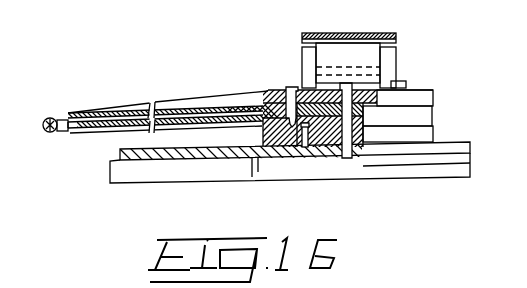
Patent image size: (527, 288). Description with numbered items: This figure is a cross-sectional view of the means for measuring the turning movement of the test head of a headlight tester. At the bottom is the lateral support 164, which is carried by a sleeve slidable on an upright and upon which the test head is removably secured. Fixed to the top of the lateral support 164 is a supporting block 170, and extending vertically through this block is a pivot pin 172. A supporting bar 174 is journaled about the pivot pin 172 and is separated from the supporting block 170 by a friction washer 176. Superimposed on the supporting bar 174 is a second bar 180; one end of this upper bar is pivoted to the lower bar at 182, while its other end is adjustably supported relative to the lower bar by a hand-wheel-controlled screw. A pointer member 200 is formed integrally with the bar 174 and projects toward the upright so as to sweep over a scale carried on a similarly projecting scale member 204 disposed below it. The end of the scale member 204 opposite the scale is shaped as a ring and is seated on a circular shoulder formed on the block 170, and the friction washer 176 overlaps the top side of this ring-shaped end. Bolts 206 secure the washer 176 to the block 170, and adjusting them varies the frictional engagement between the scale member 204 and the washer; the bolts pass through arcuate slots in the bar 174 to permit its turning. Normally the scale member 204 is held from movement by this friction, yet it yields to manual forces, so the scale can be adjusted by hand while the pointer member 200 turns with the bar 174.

The lateral support 164 is at (446, 170).
The supporting block 170 is at (272, 160).
The vertical pivot pin 172 is at (352, 160).
The supporting bar 174 is at (432, 95).
The friction washer 176 is at (310, 148).
The second bar 180 is at (318, 37).
The pivot 182 is at (392, 70).
The pointer member 200 is at (266, 65).
The scale member 204 is at (122, 127).
The bolts 206 is at (288, 86).